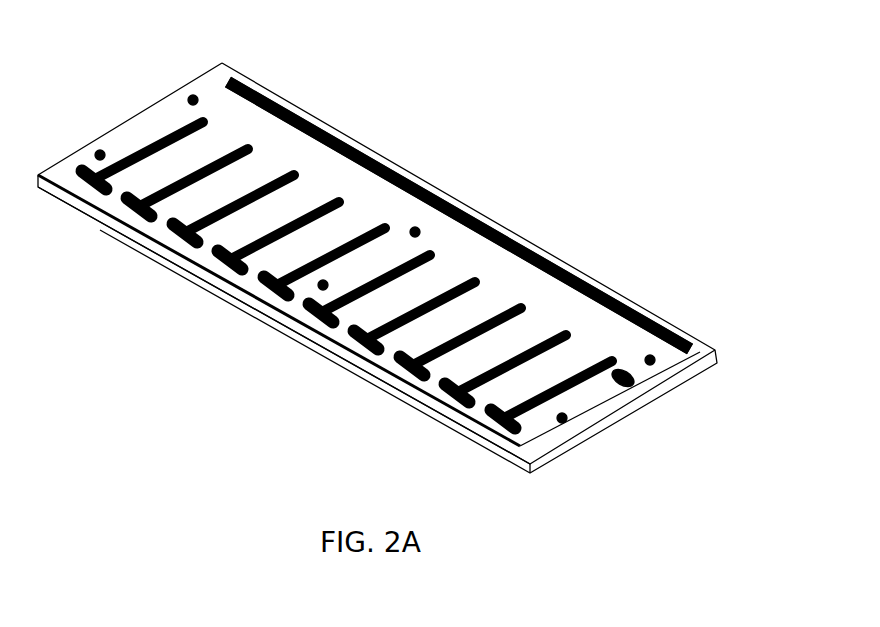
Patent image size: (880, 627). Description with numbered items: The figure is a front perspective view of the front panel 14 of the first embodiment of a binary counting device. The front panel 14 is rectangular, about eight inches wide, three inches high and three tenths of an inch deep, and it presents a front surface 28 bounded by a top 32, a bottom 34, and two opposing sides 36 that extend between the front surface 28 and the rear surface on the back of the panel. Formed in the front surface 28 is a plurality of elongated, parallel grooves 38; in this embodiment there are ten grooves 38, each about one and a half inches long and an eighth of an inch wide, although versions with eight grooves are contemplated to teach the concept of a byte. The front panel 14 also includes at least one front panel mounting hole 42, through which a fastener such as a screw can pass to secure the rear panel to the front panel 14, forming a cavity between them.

The front panel 14 is at (423, 264).
The front surface 28 is at (347, 200).
The top 32 is at (552, 262).
The bottom 34 is at (283, 320).
The opposing sides 36 is at (137, 113).
The grooves 38 is at (243, 146).
The front panel mounting hole 42 is at (566, 423).